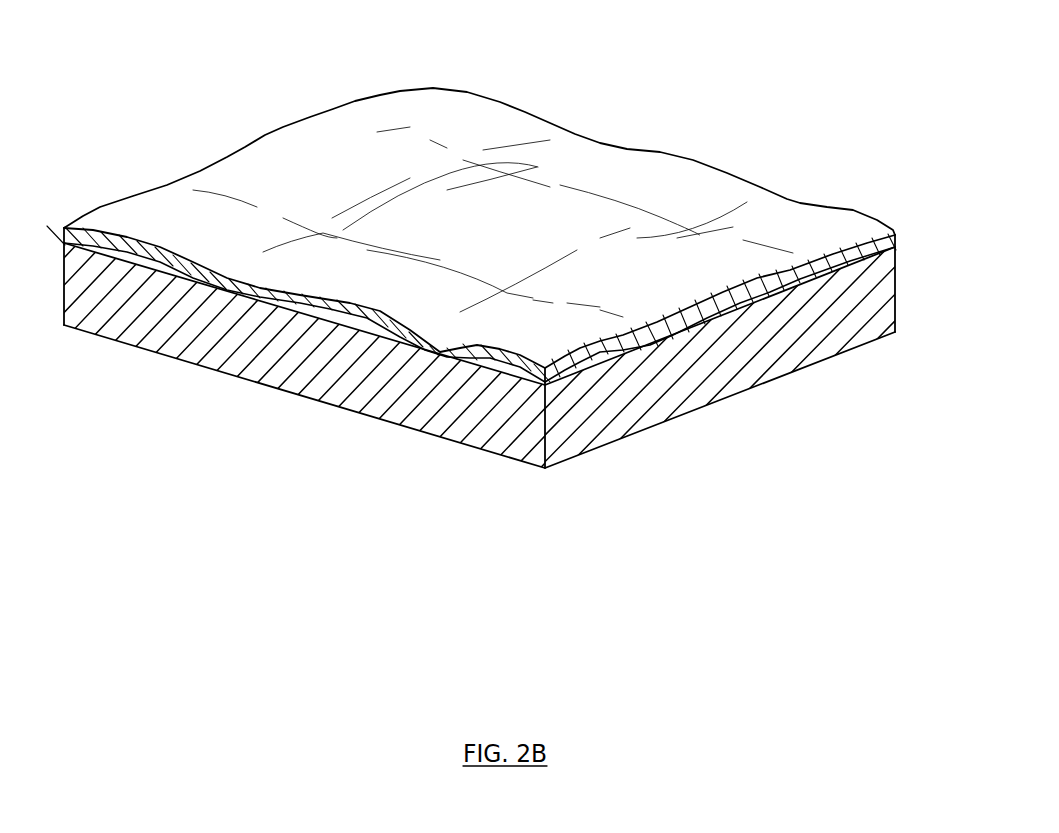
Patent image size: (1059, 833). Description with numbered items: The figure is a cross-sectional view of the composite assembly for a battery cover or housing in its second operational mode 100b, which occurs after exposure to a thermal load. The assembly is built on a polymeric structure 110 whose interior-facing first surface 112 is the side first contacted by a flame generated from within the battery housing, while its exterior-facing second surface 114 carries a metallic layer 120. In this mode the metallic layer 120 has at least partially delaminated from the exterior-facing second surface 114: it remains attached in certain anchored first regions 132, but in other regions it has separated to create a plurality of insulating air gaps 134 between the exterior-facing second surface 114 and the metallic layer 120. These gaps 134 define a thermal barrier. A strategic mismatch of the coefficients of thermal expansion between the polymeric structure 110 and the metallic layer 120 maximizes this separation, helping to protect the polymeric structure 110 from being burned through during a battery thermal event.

The second operational mode 100b is at (646, 86).
The polymeric structure 110 is at (63, 277).
The interior-facing first surface 112 is at (173, 357).
The exterior-facing second surface 114 is at (316, 316).
The metallic layer 120 is at (793, 202).
The anchored first regions 132 is at (320, 233).
The insulating air gaps 134 is at (378, 327).